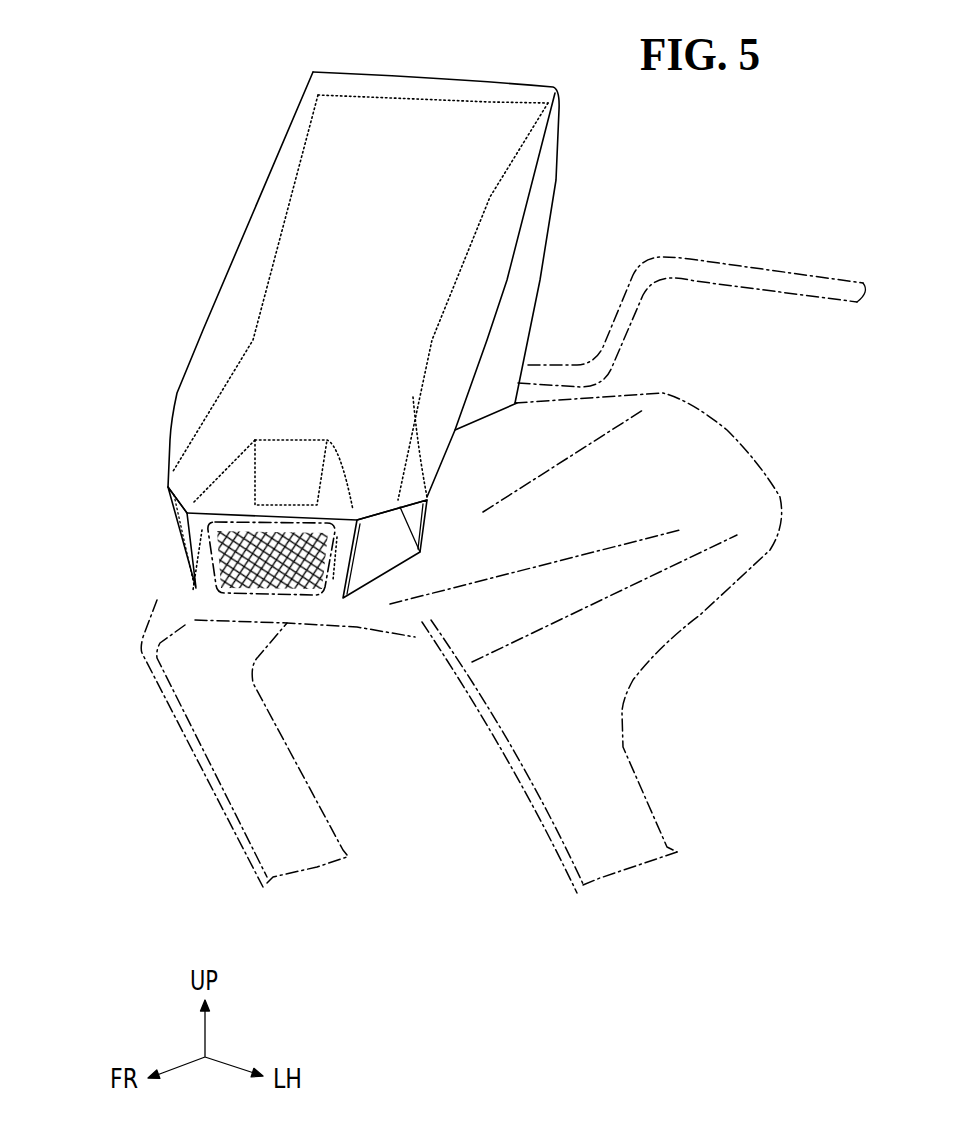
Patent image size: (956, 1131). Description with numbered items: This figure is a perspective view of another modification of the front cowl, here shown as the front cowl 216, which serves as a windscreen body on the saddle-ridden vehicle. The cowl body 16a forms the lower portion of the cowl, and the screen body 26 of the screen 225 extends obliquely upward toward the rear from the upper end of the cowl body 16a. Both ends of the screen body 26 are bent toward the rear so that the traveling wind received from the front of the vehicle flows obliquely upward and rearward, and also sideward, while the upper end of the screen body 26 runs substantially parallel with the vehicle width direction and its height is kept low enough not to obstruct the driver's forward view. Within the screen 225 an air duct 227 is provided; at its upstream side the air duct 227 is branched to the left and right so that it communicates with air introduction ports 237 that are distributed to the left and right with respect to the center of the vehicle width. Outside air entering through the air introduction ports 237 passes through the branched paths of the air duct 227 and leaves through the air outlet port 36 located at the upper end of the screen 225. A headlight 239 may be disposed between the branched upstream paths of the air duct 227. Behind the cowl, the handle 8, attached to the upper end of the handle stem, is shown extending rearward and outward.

The front cowl 216 is at (185, 213).
The screen 225 is at (283, 98).
The screen body 26 is at (313, 202).
The air outlet port 36 is at (432, 83).
The air duct 227 is at (417, 448).
The air introduction ports 237 is at (178, 530).
The headlight 239 is at (243, 593).
The handle 8 is at (783, 267).
The cowl body 16a is at (727, 427).